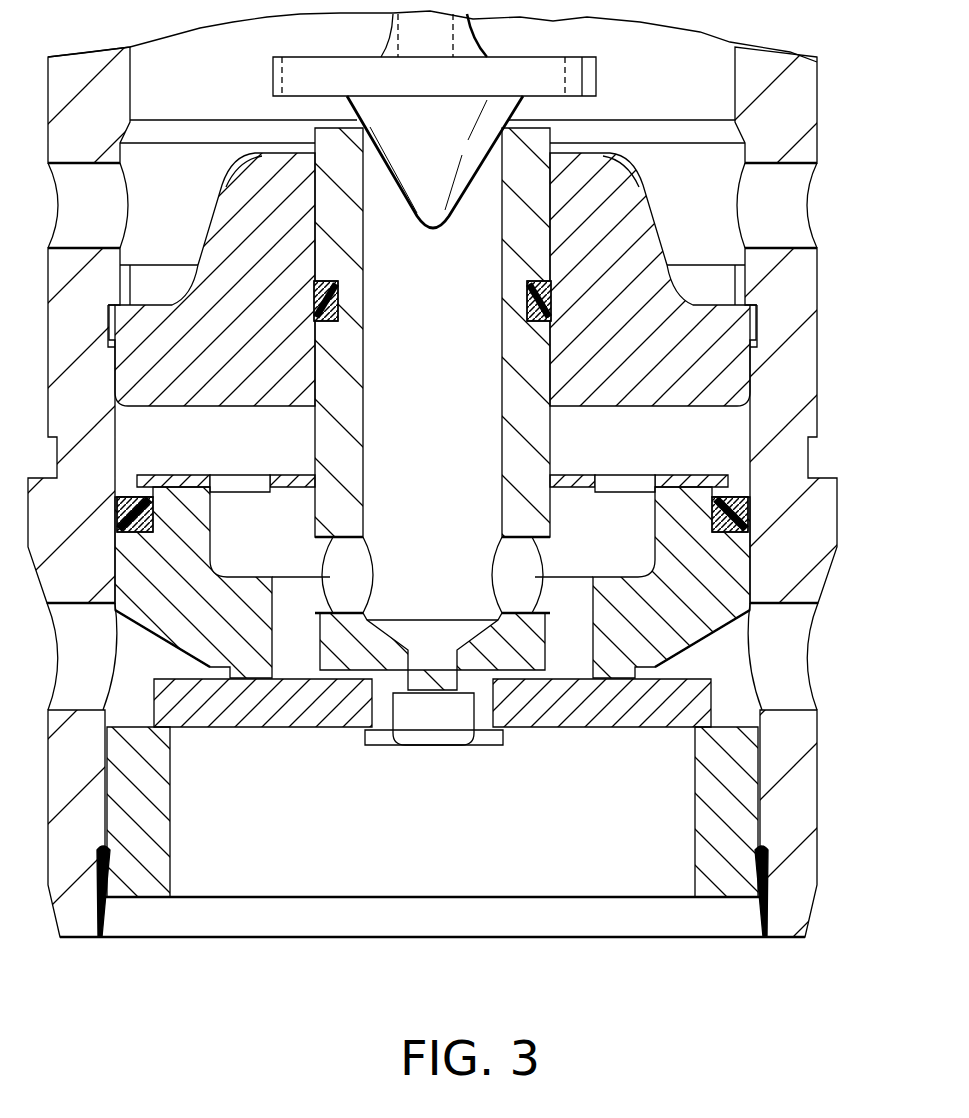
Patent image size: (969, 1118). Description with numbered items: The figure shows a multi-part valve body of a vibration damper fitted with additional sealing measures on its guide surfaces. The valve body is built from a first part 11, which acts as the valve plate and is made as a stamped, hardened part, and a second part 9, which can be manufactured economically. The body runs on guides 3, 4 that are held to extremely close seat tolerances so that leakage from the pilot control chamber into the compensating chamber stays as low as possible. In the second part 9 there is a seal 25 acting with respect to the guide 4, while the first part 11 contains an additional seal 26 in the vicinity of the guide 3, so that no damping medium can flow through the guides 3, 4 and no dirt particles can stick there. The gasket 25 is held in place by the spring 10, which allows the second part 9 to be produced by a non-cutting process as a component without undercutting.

The guide 3 is at (554, 231).
The guide 4 is at (752, 421).
The second part 9 is at (673, 602).
The spring 10 is at (693, 470).
The first part 11 is at (633, 705).
The seal 25 is at (737, 514).
The additional seal 26 is at (545, 294).